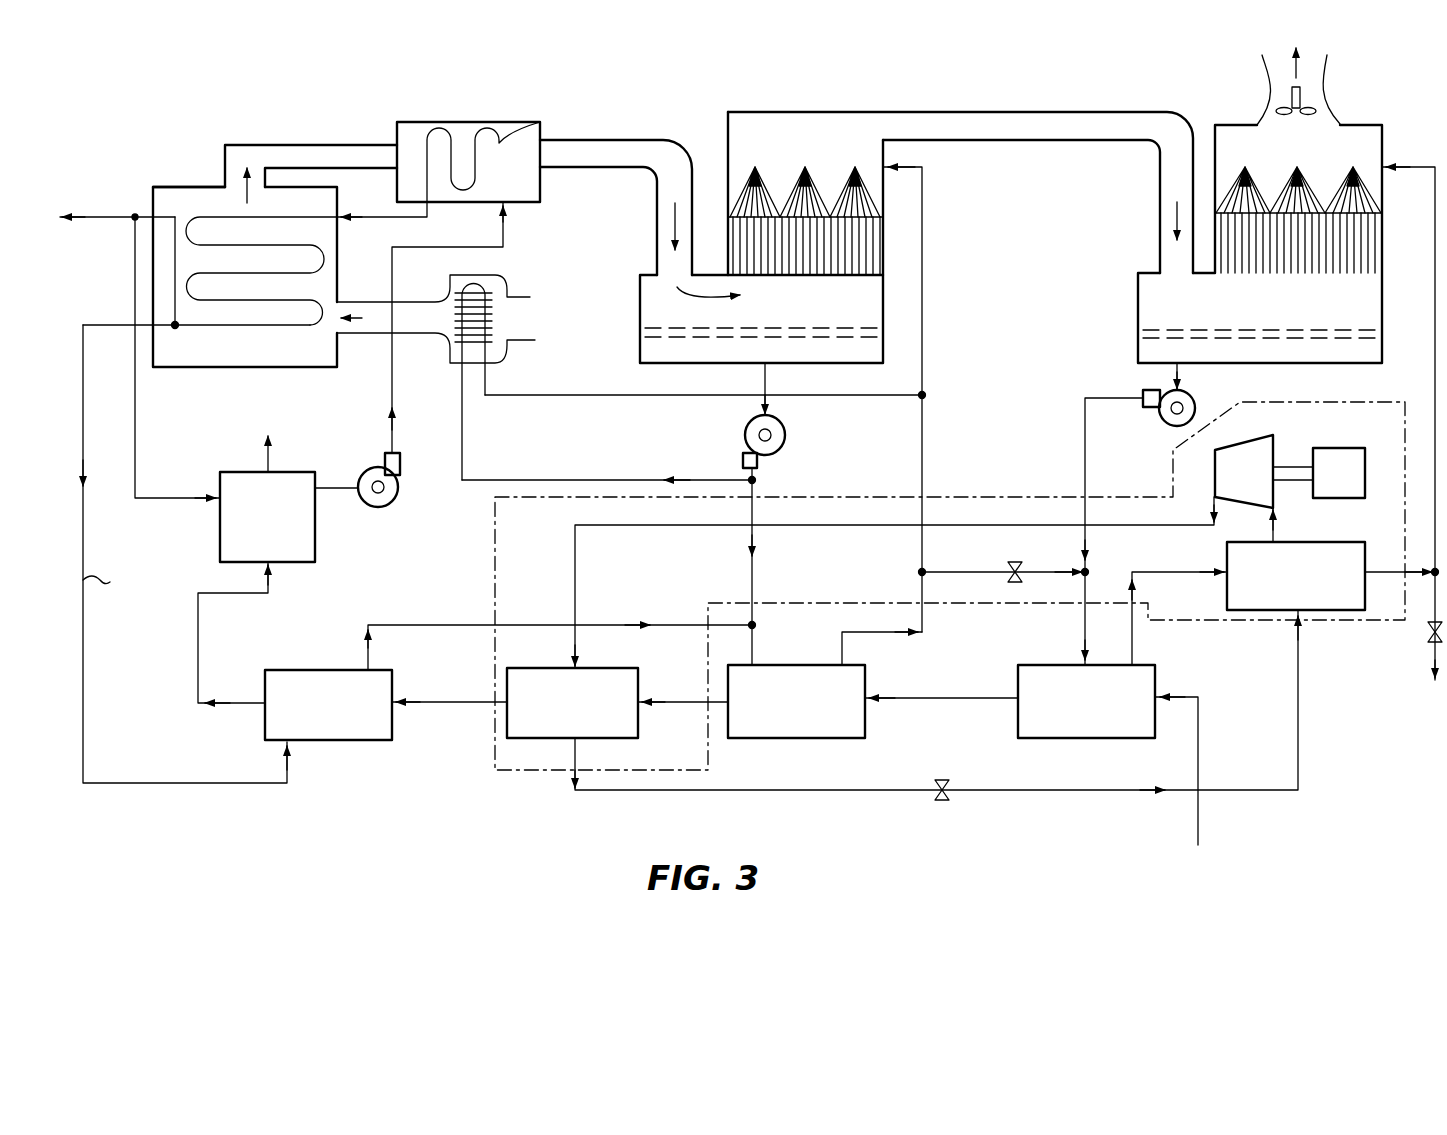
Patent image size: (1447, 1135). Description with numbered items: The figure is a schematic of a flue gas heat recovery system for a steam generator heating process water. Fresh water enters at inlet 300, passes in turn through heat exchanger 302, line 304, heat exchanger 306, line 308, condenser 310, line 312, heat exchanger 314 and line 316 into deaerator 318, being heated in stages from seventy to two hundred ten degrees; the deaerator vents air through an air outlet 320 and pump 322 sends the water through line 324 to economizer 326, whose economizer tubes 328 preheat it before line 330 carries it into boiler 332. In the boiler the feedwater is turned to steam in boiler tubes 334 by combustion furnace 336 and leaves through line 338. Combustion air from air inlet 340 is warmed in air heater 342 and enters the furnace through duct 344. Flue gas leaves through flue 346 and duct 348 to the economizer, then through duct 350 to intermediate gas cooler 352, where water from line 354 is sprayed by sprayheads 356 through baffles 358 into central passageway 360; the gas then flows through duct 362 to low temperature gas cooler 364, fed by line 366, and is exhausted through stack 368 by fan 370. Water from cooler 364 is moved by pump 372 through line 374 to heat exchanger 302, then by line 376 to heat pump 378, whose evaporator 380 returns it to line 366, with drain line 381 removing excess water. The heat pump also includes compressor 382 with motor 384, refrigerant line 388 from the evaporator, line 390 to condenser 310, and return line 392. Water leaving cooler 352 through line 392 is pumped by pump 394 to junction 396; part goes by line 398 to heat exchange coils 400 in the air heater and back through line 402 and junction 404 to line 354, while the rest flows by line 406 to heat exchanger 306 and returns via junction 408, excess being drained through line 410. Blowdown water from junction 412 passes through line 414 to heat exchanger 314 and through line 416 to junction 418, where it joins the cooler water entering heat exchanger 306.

The inlet 300 is at (1198, 757).
The heat exchanger 302 is at (1070, 738).
The line 304 is at (967, 700).
The heat exchanger 306 is at (850, 738).
The line 308 is at (672, 704).
The condenser 310 is at (543, 740).
The line 312 is at (473, 703).
The heat exchanger 314 is at (343, 740).
The line 316 is at (198, 640).
The deaerator 318 is at (308, 538).
The air vent 320 is at (272, 462).
The pump 322 is at (396, 497).
The line 324 is at (392, 397).
The economizer 326 is at (528, 122).
The economizer tubes 328 is at (540, 122).
The line 330 is at (362, 217).
The boiler 332 is at (213, 186).
The boiler tubes 334 is at (200, 219).
The combustion furnace 336 is at (187, 368).
The line 338 is at (133, 212).
The air inlet 340 is at (530, 297).
The air heater 342 is at (497, 276).
The duct 344 is at (358, 300).
The flue 346 is at (258, 160).
The duct 348 is at (333, 144).
The duct 350 is at (660, 141).
The intermediate gas cooler 352 is at (883, 298).
The line 354 is at (923, 323).
The sprayheads 356 is at (752, 172).
The baffles 358 is at (720, 235).
The central passageway 360 is at (663, 288).
The duct 362 is at (1020, 112).
The low temperature gas cooler 364 is at (1382, 245).
The line 366 is at (1435, 167).
The stack 368 is at (1273, 125).
The fan 370 is at (1325, 102).
The pump 372 is at (1196, 402).
The line 374 is at (1085, 442).
The line 376 is at (1132, 640).
The heat pump 378 is at (1396, 392).
The evaporator 380 is at (1227, 552).
The drain line 381 is at (1430, 642).
The compressor 382 is at (1250, 448).
The motor 384 is at (1347, 448).
The line 388 is at (1310, 540).
The line 390 is at (973, 527).
The line 392 is at (772, 398).
The pump 394 is at (746, 438).
The junction 396 is at (752, 480).
The line 398 is at (630, 480).
The heat exchange coils 400 is at (497, 345).
The line 402 is at (610, 396).
The junction 404 is at (923, 395).
The line 406 is at (755, 533).
The junction 408 is at (921, 573).
The line 410 is at (1048, 572).
The junction 412 is at (175, 323).
The line 414 is at (83, 652).
The line 416 is at (412, 625).
The junction 418 is at (755, 628).